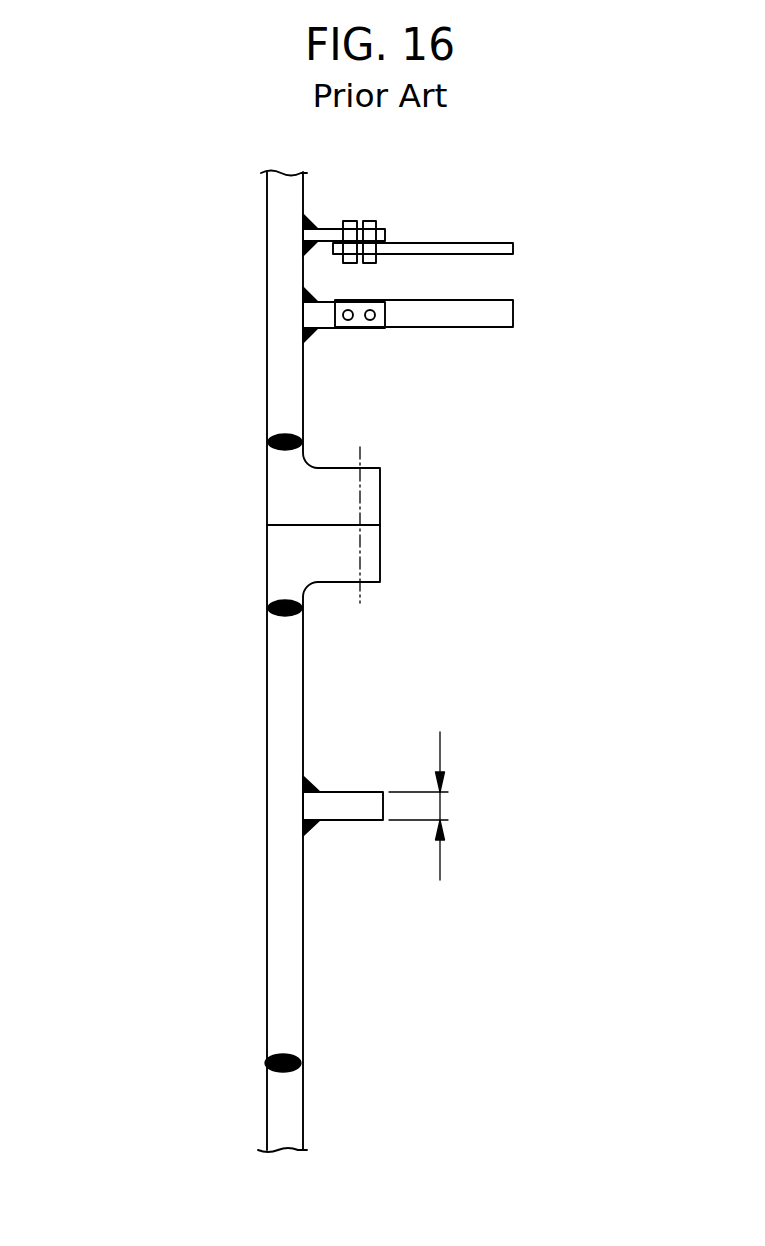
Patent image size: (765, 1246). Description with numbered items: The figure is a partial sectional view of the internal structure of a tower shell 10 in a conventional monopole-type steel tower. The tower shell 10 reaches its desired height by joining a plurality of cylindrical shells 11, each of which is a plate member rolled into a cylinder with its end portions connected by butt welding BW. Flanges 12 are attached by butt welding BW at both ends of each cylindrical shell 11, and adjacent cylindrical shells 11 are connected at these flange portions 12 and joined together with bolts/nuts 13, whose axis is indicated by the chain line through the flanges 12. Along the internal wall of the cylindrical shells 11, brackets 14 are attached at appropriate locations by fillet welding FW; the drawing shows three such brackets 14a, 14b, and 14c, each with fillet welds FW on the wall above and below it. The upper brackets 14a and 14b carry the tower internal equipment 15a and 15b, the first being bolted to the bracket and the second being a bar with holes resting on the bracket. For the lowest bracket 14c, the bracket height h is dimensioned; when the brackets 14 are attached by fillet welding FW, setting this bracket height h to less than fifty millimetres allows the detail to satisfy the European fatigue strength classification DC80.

The tower shell 10 is at (125, 308).
The cylindrical shell 11 is at (267, 230).
The flange 12 is at (383, 493).
The bolts/nuts 13 is at (364, 453).
The bracket 14 is at (408, 488).
The bracket 14a is at (387, 226).
The bracket 14b is at (378, 328).
The bracket 14c is at (358, 791).
The tower internal equipment 15a is at (513, 246).
The tower internal equipment 15b is at (513, 313).
The fillet welding FW is at (312, 221).
The butt welding BW is at (268, 441).
The bracket height h is at (428, 806).